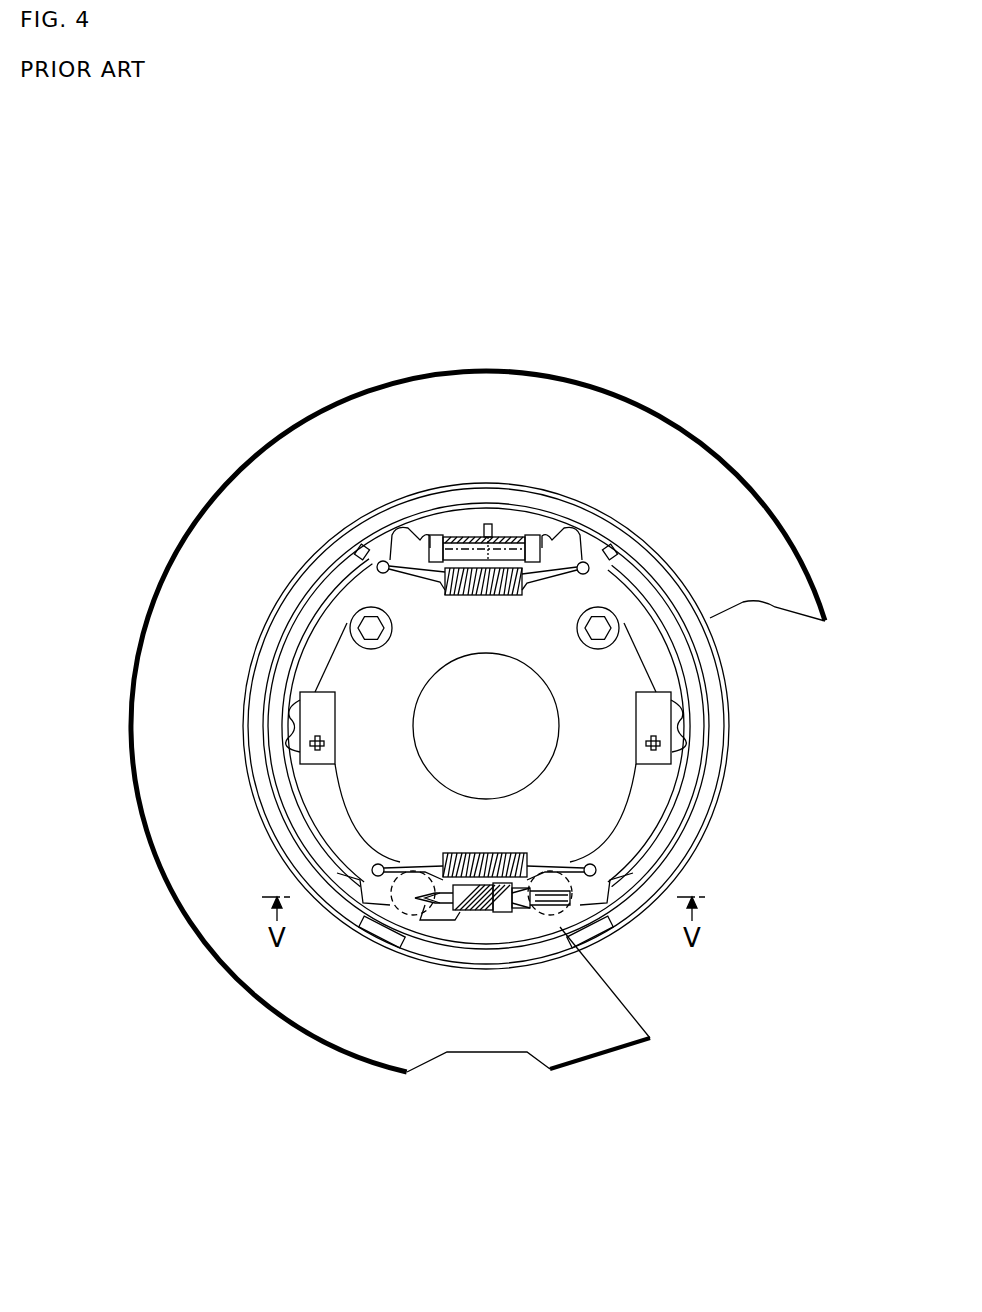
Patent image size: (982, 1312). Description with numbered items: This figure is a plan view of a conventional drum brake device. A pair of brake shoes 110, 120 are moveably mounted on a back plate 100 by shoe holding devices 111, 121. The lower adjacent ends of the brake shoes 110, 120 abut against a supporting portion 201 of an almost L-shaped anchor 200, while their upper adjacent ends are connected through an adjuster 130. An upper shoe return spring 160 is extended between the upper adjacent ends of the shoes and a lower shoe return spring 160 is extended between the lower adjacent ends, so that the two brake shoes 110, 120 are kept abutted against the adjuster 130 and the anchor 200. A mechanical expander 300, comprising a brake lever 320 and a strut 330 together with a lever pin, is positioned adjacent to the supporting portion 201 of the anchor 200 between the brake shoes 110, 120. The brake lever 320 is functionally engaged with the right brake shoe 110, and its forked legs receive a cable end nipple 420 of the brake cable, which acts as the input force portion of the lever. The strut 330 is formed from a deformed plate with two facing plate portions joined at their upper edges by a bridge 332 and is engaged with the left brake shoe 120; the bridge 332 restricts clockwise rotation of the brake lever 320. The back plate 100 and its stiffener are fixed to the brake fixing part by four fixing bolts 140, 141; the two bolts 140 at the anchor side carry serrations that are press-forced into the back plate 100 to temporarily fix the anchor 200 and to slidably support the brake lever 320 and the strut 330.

The back plate 100 is at (762, 550).
The brake shoe 110 is at (652, 806).
The shoe holding device 111 is at (672, 705).
The brake shoe 120 is at (305, 808).
The shoe holding device 121 is at (300, 703).
The adjuster 130 is at (503, 530).
The fixing bolt 140 is at (417, 866).
The fixing bolt 141 is at (369, 616).
The shoe return spring 160 is at (472, 592).
The anchor 200 is at (473, 912).
The supporting portion 201 is at (430, 912).
The mechanical expander 300 is at (548, 915).
The brake lever 320 is at (524, 908).
The strut 330 is at (452, 932).
The bridge 332 is at (555, 912).
The cable end nipple 420 is at (507, 912).